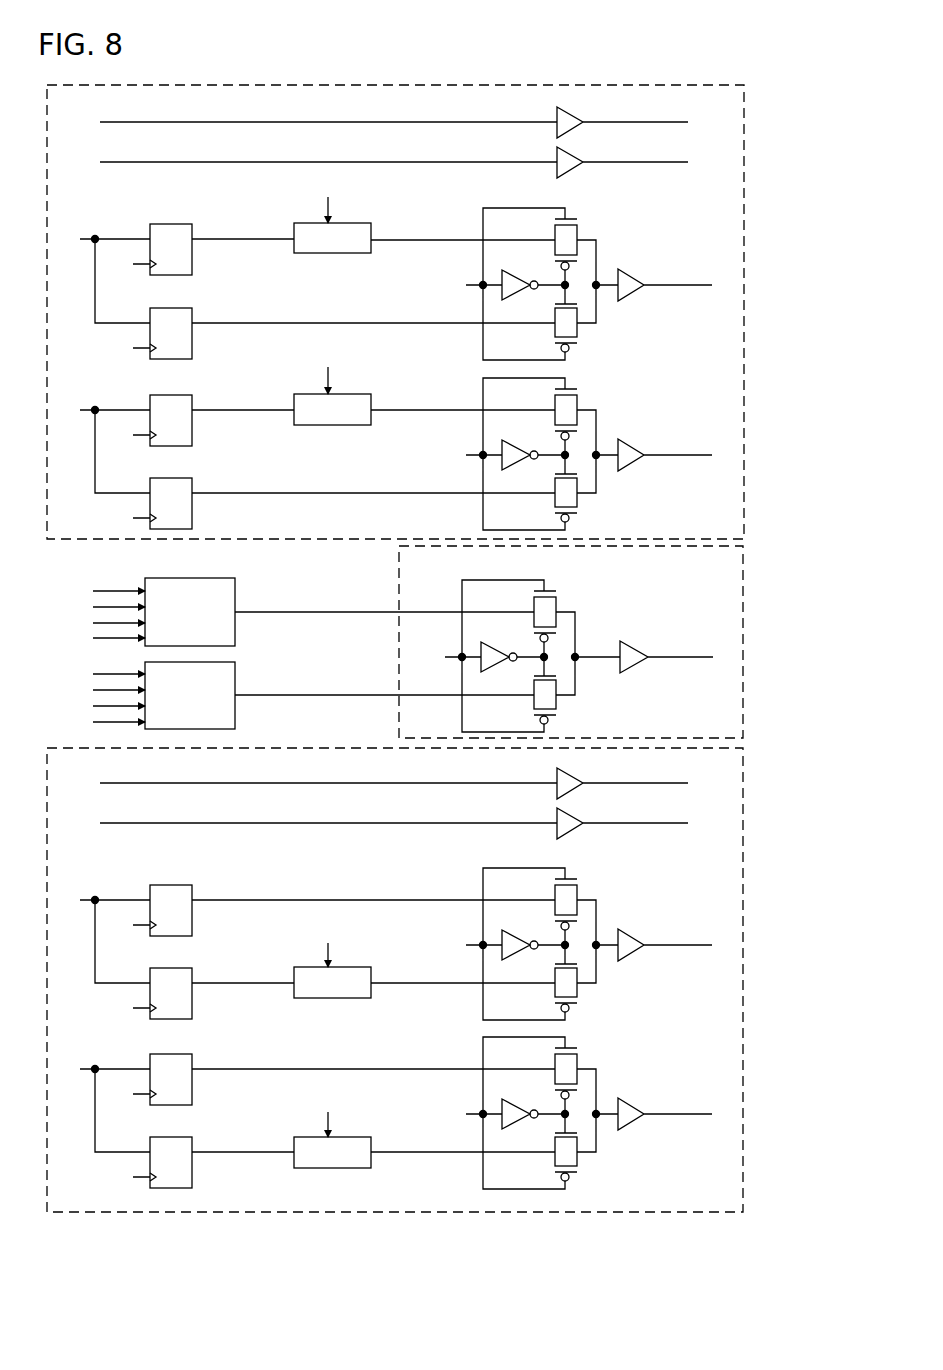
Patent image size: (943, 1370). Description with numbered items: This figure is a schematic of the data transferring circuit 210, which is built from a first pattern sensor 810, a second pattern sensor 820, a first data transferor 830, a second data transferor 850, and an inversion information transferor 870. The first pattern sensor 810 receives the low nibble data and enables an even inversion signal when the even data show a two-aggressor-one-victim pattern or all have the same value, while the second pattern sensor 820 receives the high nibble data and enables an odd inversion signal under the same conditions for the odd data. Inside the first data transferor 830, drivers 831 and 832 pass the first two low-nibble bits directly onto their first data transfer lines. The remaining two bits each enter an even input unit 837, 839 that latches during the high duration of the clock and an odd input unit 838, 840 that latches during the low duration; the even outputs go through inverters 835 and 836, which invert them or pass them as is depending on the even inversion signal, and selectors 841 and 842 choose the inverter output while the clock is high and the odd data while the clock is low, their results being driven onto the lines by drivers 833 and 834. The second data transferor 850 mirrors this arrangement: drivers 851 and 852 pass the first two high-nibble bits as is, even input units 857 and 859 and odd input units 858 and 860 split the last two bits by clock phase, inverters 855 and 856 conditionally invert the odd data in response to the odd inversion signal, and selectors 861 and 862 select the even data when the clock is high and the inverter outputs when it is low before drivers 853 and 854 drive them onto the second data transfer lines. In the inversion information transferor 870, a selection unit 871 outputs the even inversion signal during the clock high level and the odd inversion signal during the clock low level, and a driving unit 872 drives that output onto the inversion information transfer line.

The data output circuit 210 is at (765, 100).
The first data transferor 830 is at (745, 198).
The driver 831 is at (573, 114).
The driver 832 is at (573, 154).
The driver 833 is at (633, 266).
The driver 834 is at (633, 436).
The inverter 835 is at (331, 253).
The inverter 836 is at (331, 425).
The even input unit 837 is at (175, 224).
The odd input unit 838 is at (175, 308).
The even input unit 839 is at (175, 395).
The odd input unit 840 is at (175, 478).
The selector 841 is at (592, 225).
The selector 842 is at (592, 395).
The first pattern sensor 810 is at (236, 595).
The second pattern sensor 820 is at (236, 678).
The inversion information transferor 870 is at (744, 599).
The selection unit 871 is at (575, 599).
The driving unit 872 is at (637, 639).
The second data transferor 850 is at (744, 858).
The driver 851 is at (573, 775).
The driver 852 is at (573, 815).
The driver 853 is at (633, 926).
The driver 854 is at (633, 1096).
The inverter 855 is at (331, 998).
The inverter 856 is at (331, 1168).
The even input unit 857 is at (175, 885).
The odd input unit 858 is at (175, 968).
The even input unit 859 is at (175, 1054).
The odd input unit 860 is at (175, 1137).
The selector 861 is at (592, 885).
The selector 862 is at (592, 1055).